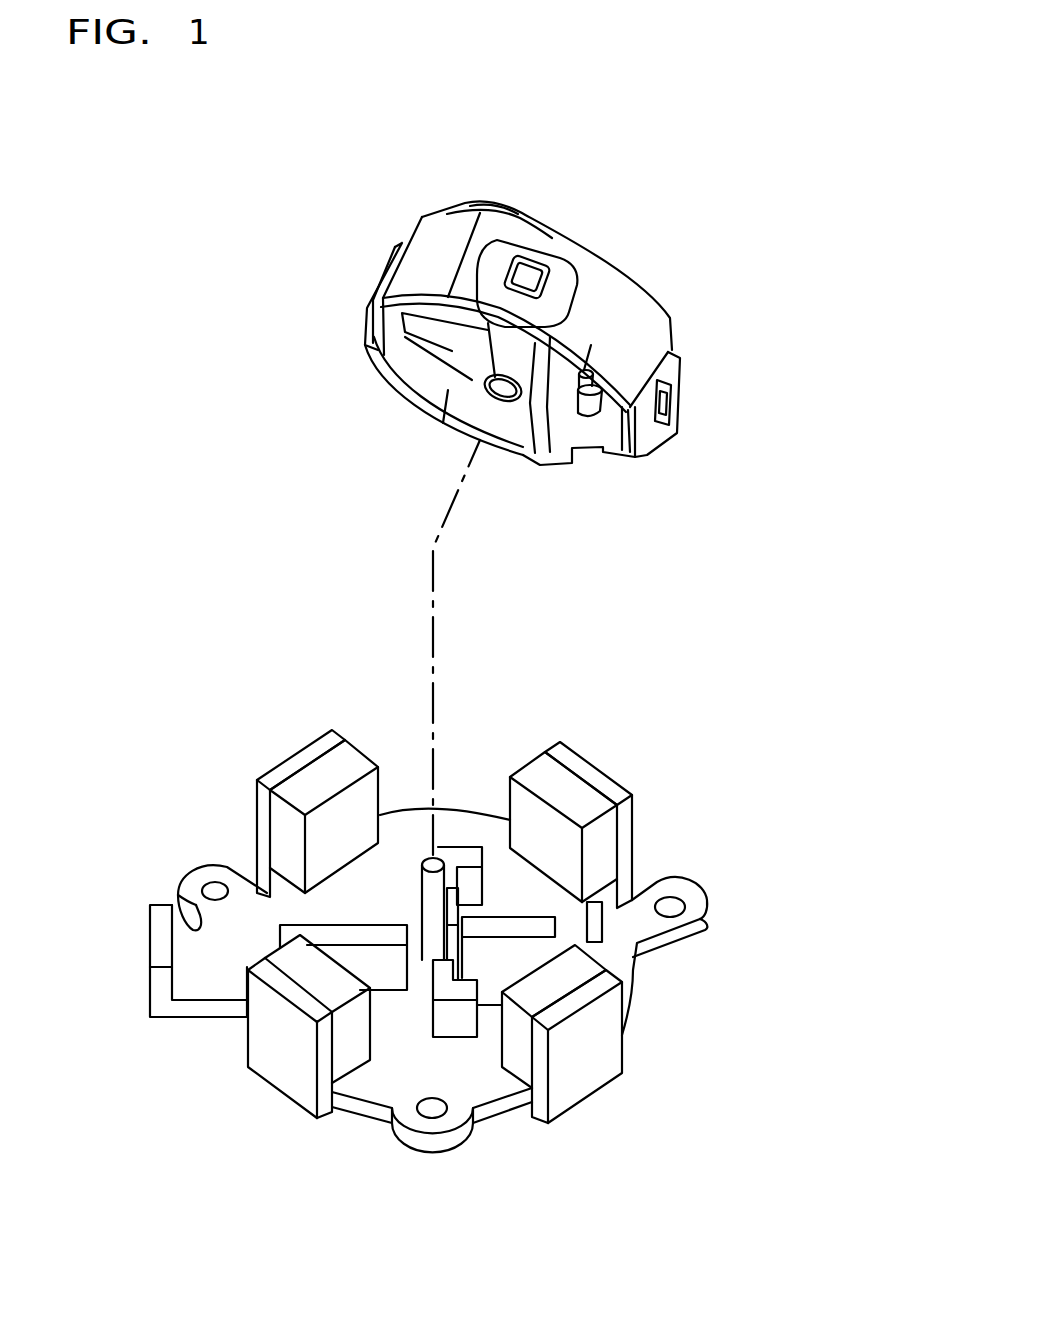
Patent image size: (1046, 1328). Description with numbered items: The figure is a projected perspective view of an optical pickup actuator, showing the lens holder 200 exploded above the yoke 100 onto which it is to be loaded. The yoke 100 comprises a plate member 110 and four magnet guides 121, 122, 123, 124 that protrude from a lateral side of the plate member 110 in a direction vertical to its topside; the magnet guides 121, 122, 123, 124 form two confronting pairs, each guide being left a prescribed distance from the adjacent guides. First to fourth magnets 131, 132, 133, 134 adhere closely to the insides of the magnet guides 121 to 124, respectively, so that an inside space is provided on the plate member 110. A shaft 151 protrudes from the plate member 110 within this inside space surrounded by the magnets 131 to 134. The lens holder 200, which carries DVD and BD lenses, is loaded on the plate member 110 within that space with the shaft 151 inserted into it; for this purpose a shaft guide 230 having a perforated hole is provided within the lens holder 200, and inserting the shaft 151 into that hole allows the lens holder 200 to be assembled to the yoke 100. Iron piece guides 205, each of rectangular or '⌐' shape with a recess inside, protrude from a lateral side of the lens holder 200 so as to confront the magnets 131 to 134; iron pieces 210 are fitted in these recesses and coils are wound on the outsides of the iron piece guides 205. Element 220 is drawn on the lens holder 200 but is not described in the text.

The yoke 100 is at (496, 929).
The plate member 110 is at (483, 1087).
The magnet guide 121 is at (290, 765).
The magnet guide 122 is at (287, 1050).
The magnet guide 123 is at (580, 1048).
The magnet guide 124 is at (593, 775).
The first magnet 131 is at (350, 760).
The second magnet 132 is at (353, 1035).
The third magnet 133 is at (570, 973).
The fourth magnet 134 is at (535, 773).
The shaft 151 is at (433, 903).
The lens holder 200 is at (594, 315).
The iron piece guide 205 is at (522, 272).
The iron piece 210 is at (523, 273).
The panel 220 is at (562, 268).
The shaft guide 230 is at (512, 400).